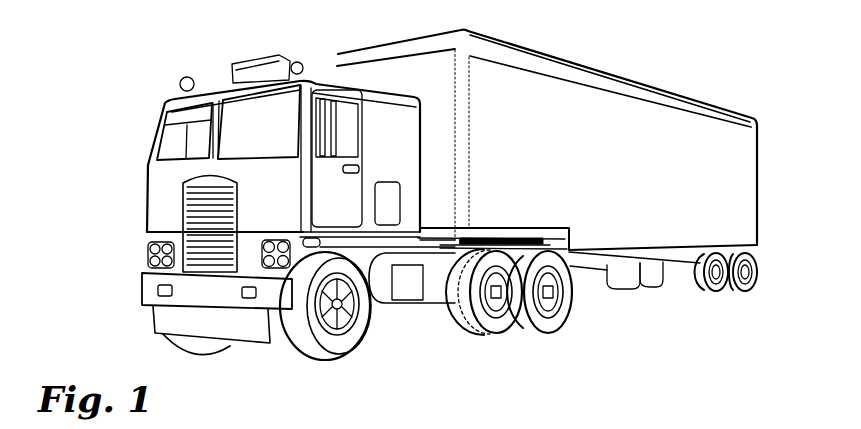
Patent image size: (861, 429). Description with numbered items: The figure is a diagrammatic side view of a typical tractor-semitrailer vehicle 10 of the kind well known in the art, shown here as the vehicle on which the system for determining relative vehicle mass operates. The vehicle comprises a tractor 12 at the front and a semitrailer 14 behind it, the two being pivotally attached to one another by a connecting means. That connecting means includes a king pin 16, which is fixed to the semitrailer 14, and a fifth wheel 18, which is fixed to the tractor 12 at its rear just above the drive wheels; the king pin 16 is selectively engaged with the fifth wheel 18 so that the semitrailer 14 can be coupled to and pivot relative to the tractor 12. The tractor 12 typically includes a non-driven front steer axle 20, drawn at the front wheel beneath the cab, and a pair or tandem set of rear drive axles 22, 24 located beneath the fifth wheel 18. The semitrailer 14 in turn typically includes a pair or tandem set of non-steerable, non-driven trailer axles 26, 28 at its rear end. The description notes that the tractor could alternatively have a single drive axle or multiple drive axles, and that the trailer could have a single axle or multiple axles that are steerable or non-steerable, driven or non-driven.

The tractor-semitrailer vehicle 10 is at (688, 75).
The tractor 12 is at (217, 80).
The semitrailer 14 is at (713, 140).
The king pin 16 is at (538, 218).
The fifth wheel 18 is at (496, 246).
The front steer axle 20 is at (297, 352).
The rear drive axle 22 is at (468, 334).
The rear drive axle 24 is at (542, 336).
The trailer axle 26 is at (692, 293).
The trailer axle 28 is at (735, 293).